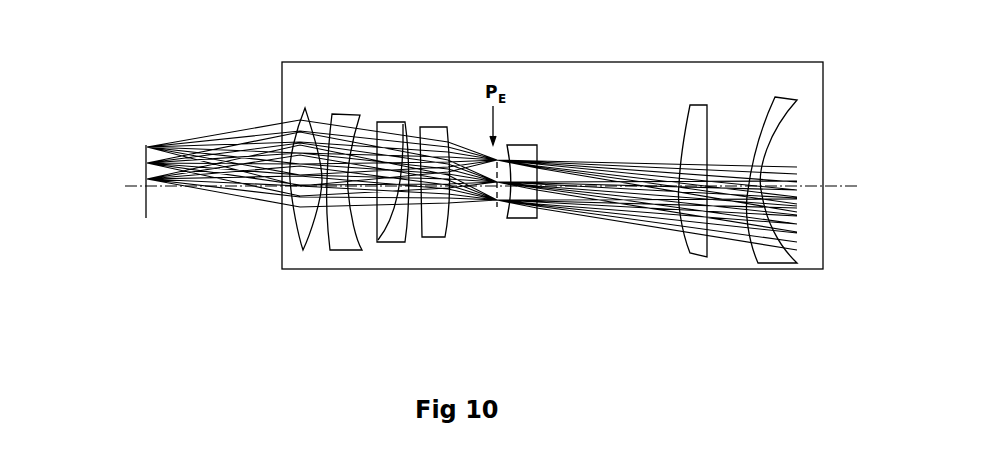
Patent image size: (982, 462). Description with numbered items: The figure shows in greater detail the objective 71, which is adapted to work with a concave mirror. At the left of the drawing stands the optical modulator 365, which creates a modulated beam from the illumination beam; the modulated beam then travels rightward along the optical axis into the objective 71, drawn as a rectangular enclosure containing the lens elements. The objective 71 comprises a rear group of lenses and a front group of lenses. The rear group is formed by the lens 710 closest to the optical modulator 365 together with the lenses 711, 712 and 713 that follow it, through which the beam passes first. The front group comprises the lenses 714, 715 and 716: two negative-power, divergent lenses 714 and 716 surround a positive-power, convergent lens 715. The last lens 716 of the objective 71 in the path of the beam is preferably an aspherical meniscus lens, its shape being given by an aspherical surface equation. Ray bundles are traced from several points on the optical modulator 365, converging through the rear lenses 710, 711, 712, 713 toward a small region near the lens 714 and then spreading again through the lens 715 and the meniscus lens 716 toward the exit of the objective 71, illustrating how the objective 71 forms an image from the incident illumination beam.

The optical modulator 365 is at (146, 207).
The objective 71 is at (282, 93).
The first lens 710 is at (308, 246).
The rear group lens 711 is at (350, 250).
The rear group lens 712 is at (397, 240).
The rear group lens 713 is at (437, 238).
The negative-power lens 714 is at (532, 218).
The positive-power lens 715 is at (700, 256).
The aspherical meniscus lens 716 is at (778, 263).